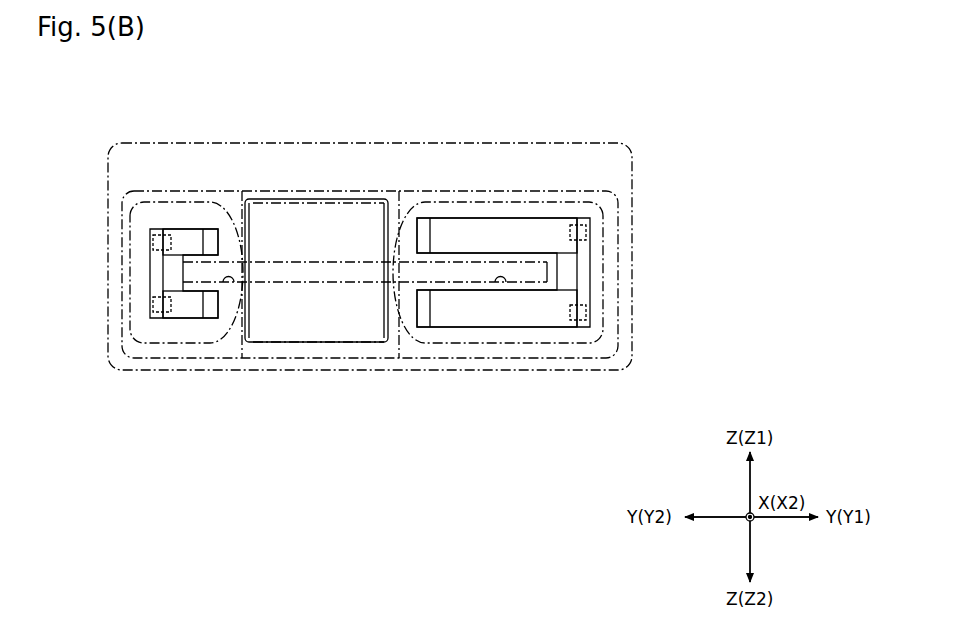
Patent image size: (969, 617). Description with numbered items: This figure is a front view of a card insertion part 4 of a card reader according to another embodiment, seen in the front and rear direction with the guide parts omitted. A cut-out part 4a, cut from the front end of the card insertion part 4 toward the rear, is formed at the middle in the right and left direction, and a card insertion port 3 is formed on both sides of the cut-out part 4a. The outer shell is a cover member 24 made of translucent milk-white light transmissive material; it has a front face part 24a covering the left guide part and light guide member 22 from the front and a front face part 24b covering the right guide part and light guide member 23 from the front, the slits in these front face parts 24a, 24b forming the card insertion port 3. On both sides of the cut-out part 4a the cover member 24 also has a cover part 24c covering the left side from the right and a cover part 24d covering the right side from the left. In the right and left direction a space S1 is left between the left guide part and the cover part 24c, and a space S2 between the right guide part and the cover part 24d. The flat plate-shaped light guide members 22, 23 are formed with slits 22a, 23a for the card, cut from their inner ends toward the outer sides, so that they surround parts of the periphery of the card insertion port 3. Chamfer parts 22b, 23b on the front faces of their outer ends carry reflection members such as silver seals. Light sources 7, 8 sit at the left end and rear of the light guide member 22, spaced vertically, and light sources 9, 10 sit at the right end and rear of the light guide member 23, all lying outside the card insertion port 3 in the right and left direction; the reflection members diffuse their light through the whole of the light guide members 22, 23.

The card insertion part 4 is at (384, 250).
The cut-out part 4a is at (288, 178).
The cover member 24 is at (387, 143).
The front face part 24a is at (143, 333).
The front face part 24b is at (553, 335).
The cover part 24c is at (257, 310).
The cover part 24d is at (380, 308).
The light guide member 22 is at (136, 255).
The slit 22a is at (208, 261).
The chamfer part 22b is at (155, 272).
The light guide member 23 is at (558, 258).
The slit 23a is at (450, 261).
The chamfer part 23b is at (585, 280).
The light source 7 is at (150, 242).
The light source 8 is at (150, 305).
The light source 9 is at (586, 315).
The light source 10 is at (586, 232).
The card insertion port 3 is at (236, 286).
The space S1 is at (233, 247).
The space S2 is at (411, 237).